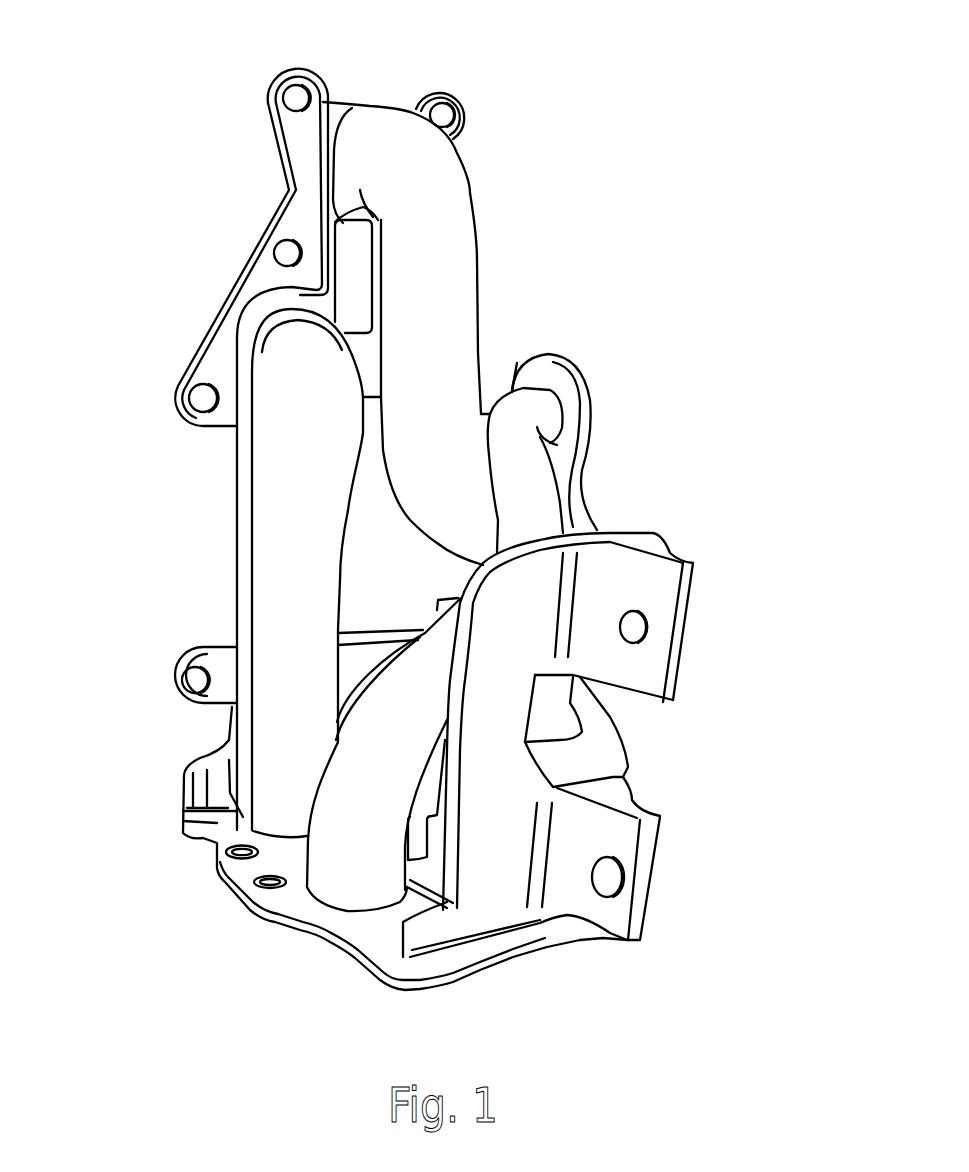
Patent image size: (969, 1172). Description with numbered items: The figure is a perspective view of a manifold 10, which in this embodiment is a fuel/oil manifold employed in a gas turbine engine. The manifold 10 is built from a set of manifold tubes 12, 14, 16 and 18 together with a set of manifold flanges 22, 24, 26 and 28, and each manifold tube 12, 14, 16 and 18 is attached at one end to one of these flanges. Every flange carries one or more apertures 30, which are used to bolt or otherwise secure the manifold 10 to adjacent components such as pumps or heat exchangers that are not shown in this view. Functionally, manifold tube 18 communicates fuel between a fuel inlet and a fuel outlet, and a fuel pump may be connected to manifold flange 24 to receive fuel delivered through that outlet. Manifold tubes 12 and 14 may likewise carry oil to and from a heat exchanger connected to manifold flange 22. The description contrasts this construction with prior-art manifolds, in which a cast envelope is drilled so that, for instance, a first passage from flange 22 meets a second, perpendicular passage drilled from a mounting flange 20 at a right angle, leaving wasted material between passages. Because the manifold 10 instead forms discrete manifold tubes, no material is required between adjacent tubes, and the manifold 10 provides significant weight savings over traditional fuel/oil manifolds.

The manifold 10 is at (160, 86).
The manifold tube 12 is at (233, 528).
The manifold tube 14 is at (480, 255).
The manifold tube 16 is at (540, 478).
The manifold tube 18 is at (425, 632).
The mounting flange 20 is at (297, 930).
The manifold flange 22 is at (272, 212).
The manifold flange 24 is at (587, 407).
The manifold flange 26 is at (680, 688).
The manifold flange 28 is at (207, 647).
The apertures 30 is at (312, 85).